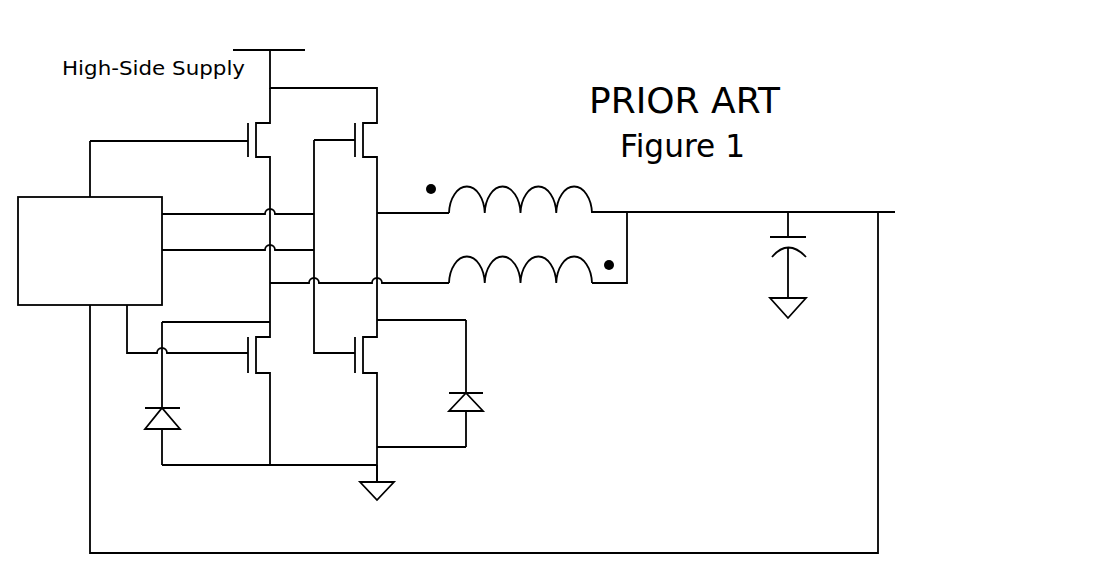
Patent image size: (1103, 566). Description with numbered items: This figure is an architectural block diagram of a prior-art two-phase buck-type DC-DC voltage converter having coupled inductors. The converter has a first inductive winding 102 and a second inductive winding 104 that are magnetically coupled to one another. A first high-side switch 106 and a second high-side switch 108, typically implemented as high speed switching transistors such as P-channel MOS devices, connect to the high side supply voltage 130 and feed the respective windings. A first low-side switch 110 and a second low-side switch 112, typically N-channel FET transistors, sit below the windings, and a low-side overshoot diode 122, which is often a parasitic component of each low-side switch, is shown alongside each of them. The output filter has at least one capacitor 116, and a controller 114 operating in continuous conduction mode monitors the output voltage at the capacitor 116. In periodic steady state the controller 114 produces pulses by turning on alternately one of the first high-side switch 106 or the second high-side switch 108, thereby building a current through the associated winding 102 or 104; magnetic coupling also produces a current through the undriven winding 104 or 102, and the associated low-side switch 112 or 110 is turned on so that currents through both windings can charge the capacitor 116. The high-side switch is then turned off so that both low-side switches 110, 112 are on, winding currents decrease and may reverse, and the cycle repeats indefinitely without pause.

The high side supply voltage 130 is at (278, 43).
The second high-side switch 108 is at (243, 145).
The first high-side switch 106 is at (377, 140).
The second low-side switch 112 is at (262, 386).
The first low-side switch 110 is at (370, 355).
The first inductive winding 102 is at (505, 185).
The second inductive winding 104 is at (529, 288).
The controller 114 is at (90, 251).
The low-side overshoot diode 122 is at (535, 388).
The capacitor 116 is at (772, 257).